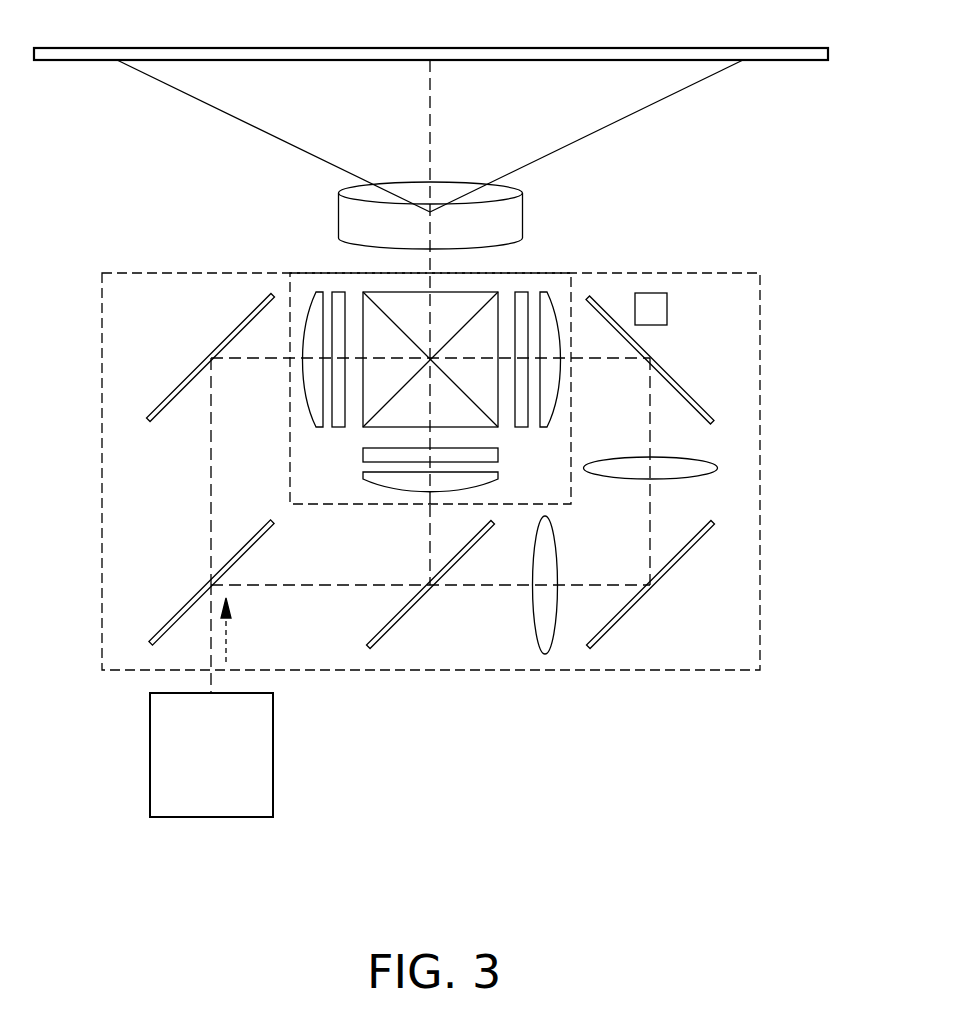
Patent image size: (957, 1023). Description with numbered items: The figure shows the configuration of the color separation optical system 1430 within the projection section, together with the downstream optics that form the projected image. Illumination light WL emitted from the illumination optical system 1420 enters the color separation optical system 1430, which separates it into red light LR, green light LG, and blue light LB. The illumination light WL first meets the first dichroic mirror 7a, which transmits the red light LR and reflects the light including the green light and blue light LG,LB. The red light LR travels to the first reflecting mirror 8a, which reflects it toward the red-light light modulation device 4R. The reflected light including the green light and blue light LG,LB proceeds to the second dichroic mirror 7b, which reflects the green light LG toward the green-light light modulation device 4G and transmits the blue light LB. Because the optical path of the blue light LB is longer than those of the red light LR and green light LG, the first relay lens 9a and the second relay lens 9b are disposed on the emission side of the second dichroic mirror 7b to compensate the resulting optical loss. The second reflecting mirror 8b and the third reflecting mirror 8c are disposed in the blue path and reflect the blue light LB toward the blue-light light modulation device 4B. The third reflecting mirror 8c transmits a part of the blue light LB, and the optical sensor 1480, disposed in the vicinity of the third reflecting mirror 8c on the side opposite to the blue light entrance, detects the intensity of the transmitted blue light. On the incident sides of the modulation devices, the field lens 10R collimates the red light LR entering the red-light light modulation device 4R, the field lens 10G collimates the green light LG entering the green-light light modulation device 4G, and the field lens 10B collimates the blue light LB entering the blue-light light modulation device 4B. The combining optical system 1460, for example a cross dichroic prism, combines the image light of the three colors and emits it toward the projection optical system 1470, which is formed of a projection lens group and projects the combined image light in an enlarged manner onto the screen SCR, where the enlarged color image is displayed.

The screen SCR is at (790, 62).
The projection optical system 1470 is at (338, 204).
The combining optical system 1460 is at (450, 292).
The color separation optical system 1430 is at (101, 462).
The optical sensor 1480 is at (651, 293).
The illumination optical system 1420 is at (273, 773).
The field lens 10R is at (320, 290).
The red-light light modulation device 4R is at (338, 292).
The blue-light light modulation device 4B is at (520, 292).
The field lens 10B is at (545, 292).
The green-light light modulation device 4G is at (363, 450).
The field lens 10G is at (363, 478).
The first reflecting mirror 8a is at (190, 378).
The second reflecting mirror 8b is at (620, 620).
The third reflecting mirror 8c is at (682, 375).
The first dichroic mirror 7a is at (185, 607).
The second dichroic mirror 7b is at (420, 606).
The first relay lens 9a is at (533, 628).
The second relay lens 9b is at (732, 458).
The red light LR is at (211, 512).
The green light LG is at (430, 555).
The blue light LB is at (650, 552).
The green light and blue light LG,LB is at (266, 587).
The illumination light WL is at (226, 652).